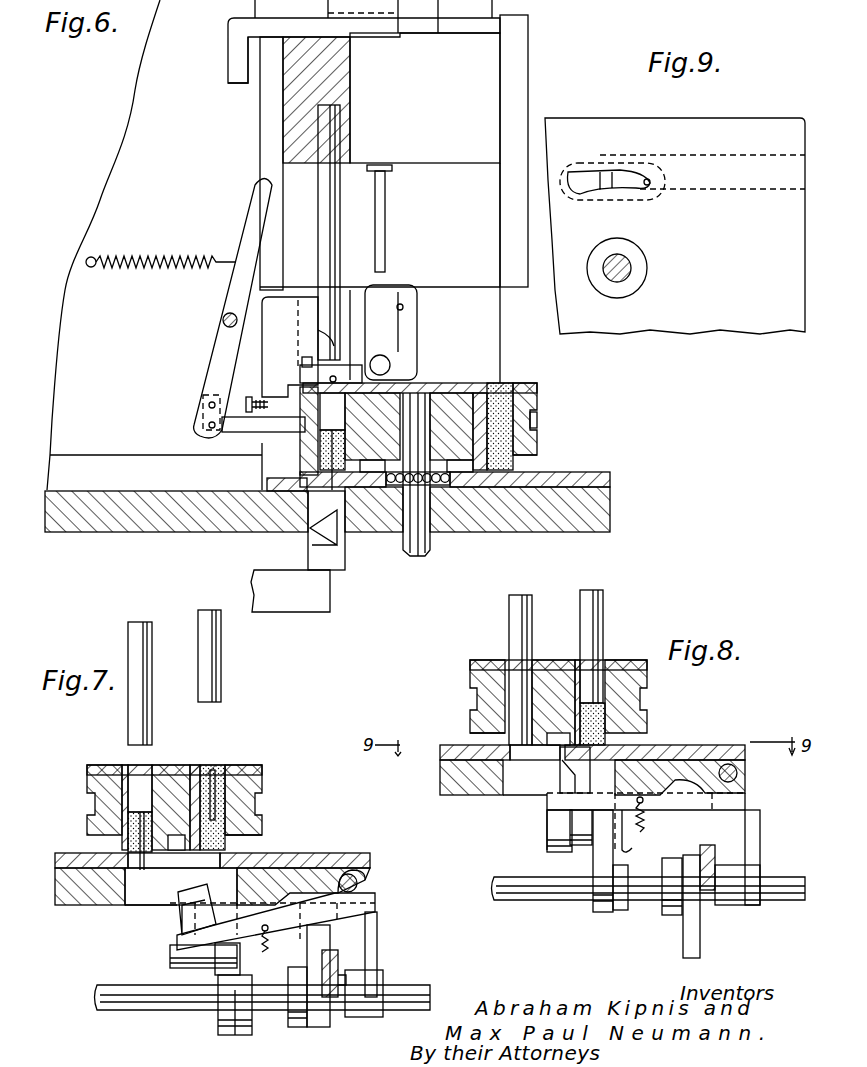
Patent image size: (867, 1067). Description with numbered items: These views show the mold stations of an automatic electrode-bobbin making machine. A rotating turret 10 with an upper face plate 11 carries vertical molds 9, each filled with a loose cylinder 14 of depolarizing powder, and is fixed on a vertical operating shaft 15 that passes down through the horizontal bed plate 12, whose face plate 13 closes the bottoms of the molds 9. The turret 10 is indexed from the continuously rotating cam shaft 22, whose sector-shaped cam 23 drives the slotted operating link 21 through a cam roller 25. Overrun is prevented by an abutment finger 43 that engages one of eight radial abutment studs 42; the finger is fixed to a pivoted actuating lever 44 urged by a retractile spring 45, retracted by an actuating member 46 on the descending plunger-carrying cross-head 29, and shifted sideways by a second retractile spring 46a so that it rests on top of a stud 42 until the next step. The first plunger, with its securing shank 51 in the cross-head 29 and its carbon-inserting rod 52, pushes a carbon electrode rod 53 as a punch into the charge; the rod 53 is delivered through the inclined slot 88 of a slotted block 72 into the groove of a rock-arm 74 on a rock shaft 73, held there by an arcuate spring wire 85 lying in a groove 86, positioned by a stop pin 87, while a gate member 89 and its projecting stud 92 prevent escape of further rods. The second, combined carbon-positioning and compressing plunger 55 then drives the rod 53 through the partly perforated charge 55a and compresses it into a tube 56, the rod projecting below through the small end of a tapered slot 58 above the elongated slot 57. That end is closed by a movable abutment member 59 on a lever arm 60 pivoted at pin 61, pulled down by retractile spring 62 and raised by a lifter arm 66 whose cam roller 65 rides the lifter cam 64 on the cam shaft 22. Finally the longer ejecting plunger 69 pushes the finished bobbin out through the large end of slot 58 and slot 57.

In FIG. 6, the mold 9 is at (480, 383).
In FIG. 7, the mold 9 is at (163, 770).
In FIG. 8, the mold 9 is at (540, 668).
In FIG. 6, the turret 10 is at (538, 401).
In FIG. 7, the turret 10 is at (262, 826).
In FIG. 8, the turret 10 is at (470, 685).
In FIG. 6, the face plate 11 is at (537, 386).
In FIG. 7, the face plate 11 is at (262, 768).
In FIG. 8, the face plate 11 is at (470, 666).
In FIG. 6, the bed plate 12 is at (610, 493).
In FIG. 7, the bed plate 12 is at (62, 905).
In FIG. 8, the bed plate 12 is at (592, 777).
In FIG. 6, the face plate 13 is at (592, 471).
In FIG. 9, the face plate 13 is at (708, 122).
In FIG. 7, the face plate 13 is at (366, 853).
In FIG. 8, the face plate 13 is at (725, 745).
In FIG. 6, the cylinder 14 is at (502, 383).
In FIG. 6, the operating shaft 15 is at (415, 548).
In FIG. 9, the operating shaft 15 is at (617, 282).
In FIG. 7, the operating link 21 is at (340, 968).
In FIG. 8, the operating link 21 is at (708, 846).
In FIG. 7, the cam shaft 22 is at (417, 986).
In FIG. 8, the cam shaft 22 is at (510, 900).
In FIG. 7, the sector-shaped cam 23 is at (322, 945).
In FIG. 8, the sector-shaped cam 23 is at (700, 932).
In FIG. 7, the cam roller 25 is at (303, 1012).
In FIG. 8, the cam roller 25 is at (690, 900).
In FIG. 6, the cross-head 29 is at (352, 76).
In FIG. 6, the abutment stud 42 is at (538, 421).
In FIG. 6, the abutment finger 43 is at (235, 425).
In FIG. 6, the actuating lever 44 is at (240, 233).
In FIG. 6, the retractile spring 45 is at (146, 256).
In FIG. 6, the actuating member 46 is at (234, 80).
In FIG. 6, the retractile spring 46a is at (258, 400).
In FIG. 6, the securing shank 51 is at (390, 172).
In FIG. 6, the carbon-inserting rod 52 is at (385, 212).
In FIG. 7, the carbon electrode rod 53 is at (138, 847).
In FIG. 8, the carbon electrode rod 53 is at (605, 738).
In FIG. 7, the carbon-positioning and compressing plunger 55 is at (200, 672).
In FIG. 8, the carbon-positioning and compressing plunger 55 is at (582, 612).
In FIG. 7, the partly perforated cylindrical charge 55a is at (236, 767).
In FIG. 6, the compressed tube 56 is at (300, 456).
In FIG. 7, the compressed tube 56 is at (100, 810).
In FIG. 8, the compressed tube 56 is at (605, 716).
In FIG. 6, the elongated slot 57 is at (357, 530).
In FIG. 9, the elongated slot 57 is at (593, 200).
In FIG. 7, the elongated slot 57 is at (132, 900).
In FIG. 8, the elongated slot 57 is at (512, 795).
In FIG. 6, the tapered slot 58 is at (272, 479).
In FIG. 9, the tapered slot 58 is at (589, 170).
In FIG. 7, the tapered slot 58 is at (170, 868).
In FIG. 8, the tapered slot 58 is at (522, 757).
In FIG. 6, the abutment member 59 is at (303, 530).
In FIG. 9, the abutment member 59 is at (640, 188).
In FIG. 7, the abutment member 59 is at (183, 897).
In FIG. 8, the abutment member 59 is at (572, 762).
In FIG. 9, the lever arm 60 is at (720, 190).
In FIG. 7, the lever arm 60 is at (285, 925).
In FIG. 8, the lever arm 60 is at (625, 815).
In FIG. 7, the pivot pin 61 is at (360, 883).
In FIG. 8, the pivot pin 61 is at (746, 770).
In FIG. 8, the retractile spring 62 is at (645, 824).
In FIG. 7, the lifter cam 64 is at (222, 1015).
In FIG. 8, the lifter cam 64 is at (597, 897).
In FIG. 7, the cam roller 65 is at (204, 954).
In FIG. 8, the cam roller 65 is at (598, 826).
In FIG. 6, the lifter arm 66 is at (308, 612).
In FIG. 8, the lifter arm 66 is at (575, 820).
In FIG. 6, the ejecting plunger 69 is at (318, 272).
In FIG. 7, the ejecting plunger 69 is at (128, 702).
In FIG. 8, the ejecting plunger 69 is at (509, 630).
In FIG. 6, the slotted block 72 is at (410, 296).
In FIG. 6, the rock shaft 73 is at (391, 365).
In FIG. 6, the rock-arm 74 is at (400, 336).
In FIG. 6, the spring wire 85 is at (350, 292).
In FIG. 6, the groove 86 is at (298, 306).
In FIG. 6, the stop pin 87 is at (404, 307).
In FIG. 6, the inclined slot 88 is at (318, 340).
In FIG. 6, the gate member 89 is at (302, 360).
In FIG. 6, the projecting stud 92 is at (300, 376).